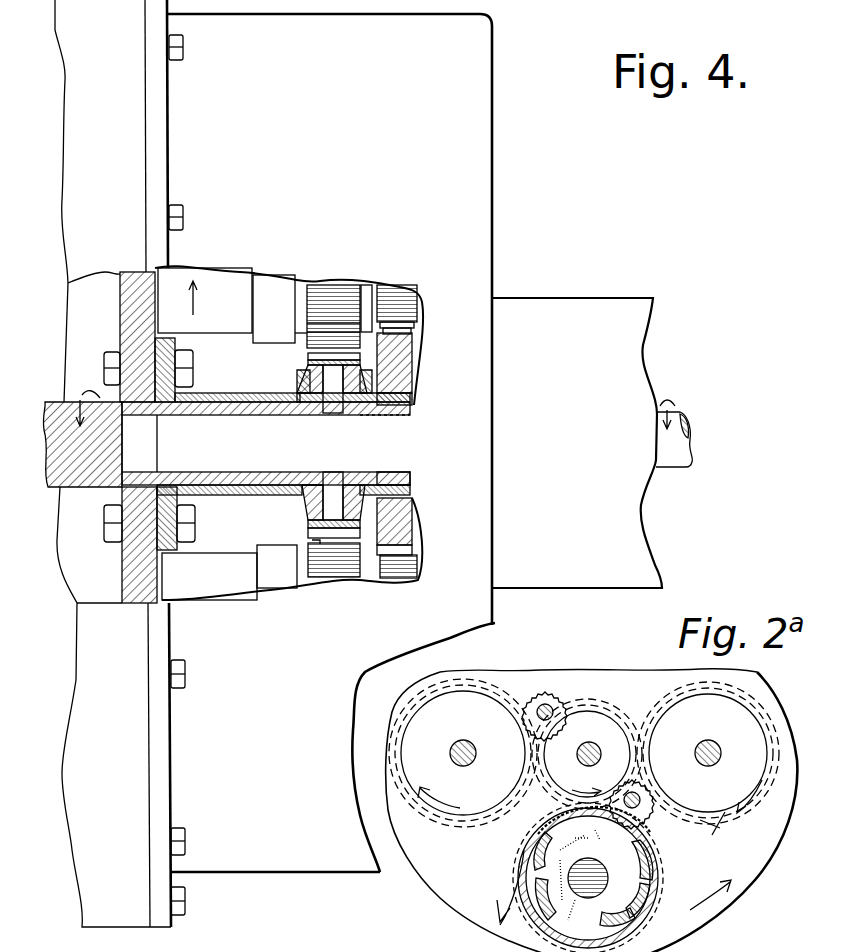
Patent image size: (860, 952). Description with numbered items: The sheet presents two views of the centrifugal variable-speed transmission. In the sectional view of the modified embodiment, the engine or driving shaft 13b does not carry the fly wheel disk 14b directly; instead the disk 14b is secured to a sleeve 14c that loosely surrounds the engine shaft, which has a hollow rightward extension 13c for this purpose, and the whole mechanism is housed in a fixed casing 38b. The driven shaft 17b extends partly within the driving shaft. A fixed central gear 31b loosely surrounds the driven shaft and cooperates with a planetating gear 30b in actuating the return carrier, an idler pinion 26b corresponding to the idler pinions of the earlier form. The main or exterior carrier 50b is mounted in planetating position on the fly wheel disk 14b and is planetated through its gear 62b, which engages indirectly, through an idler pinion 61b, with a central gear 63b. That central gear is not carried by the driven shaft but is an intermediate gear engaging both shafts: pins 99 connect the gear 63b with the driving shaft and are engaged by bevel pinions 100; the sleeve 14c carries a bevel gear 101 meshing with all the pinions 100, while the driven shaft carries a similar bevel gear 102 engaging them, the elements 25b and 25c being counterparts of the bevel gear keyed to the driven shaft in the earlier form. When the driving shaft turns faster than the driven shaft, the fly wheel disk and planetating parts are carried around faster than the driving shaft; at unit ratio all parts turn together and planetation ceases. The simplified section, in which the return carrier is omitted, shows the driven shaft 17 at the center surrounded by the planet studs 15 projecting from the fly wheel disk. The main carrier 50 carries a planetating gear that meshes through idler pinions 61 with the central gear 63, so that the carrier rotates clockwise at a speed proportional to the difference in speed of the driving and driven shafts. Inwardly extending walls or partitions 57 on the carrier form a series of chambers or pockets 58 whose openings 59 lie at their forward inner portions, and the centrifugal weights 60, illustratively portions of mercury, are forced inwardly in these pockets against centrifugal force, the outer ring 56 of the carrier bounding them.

In FIG. 4, the fixed casing 38b is at (358, 463).
In FIG. 4, the fly wheel disk 14b is at (130, 321).
In FIG. 4, the sleeve 14c is at (220, 393).
In FIG. 4, the engine shaft 13b is at (70, 425).
In FIG. 4, the driven shaft 17b is at (702, 439).
In FIG. 4, the hollow rightward extension 13c is at (242, 480).
In FIG. 4, the bevel gear 101 is at (300, 378).
In FIG. 4, the main or exterior carrier 50b is at (292, 292).
In FIG. 4, the gear 62b is at (333, 290).
In FIG. 4, the gear 30b is at (400, 290).
In FIG. 4, the collar 26b is at (400, 330).
In FIG. 4, the fixed central gear 31b is at (412, 365).
In FIG. 4, the central gear 63b is at (308, 356).
In FIG. 4, the pins 99 is at (332, 442).
In FIG. 4, the bevel pinions 100 is at (335, 405).
In FIG. 4, the bevel gear 102 is at (367, 395).
In FIG. 4, the spindle 25c is at (303, 480).
In FIG. 4, the spindle 25b is at (385, 475).
In FIG. 4, the pinion 61b is at (312, 538).
In FIG. 2A, the studs 15 is at (470, 747).
In FIG. 2A, the driven shaft 17 is at (578, 754).
In FIG. 2A, the idler pinions 61 is at (540, 700).
In FIG. 2A, the central gear 63 is at (566, 817).
In FIG. 2A, the drum 56 is at (652, 920).
In FIG. 2A, the main carrier 50 is at (645, 915).
In FIG. 2A, the chambers or pockets 58 is at (646, 872).
In FIG. 2A, the openings 59 is at (645, 898).
In FIG. 2A, the inwardly extending walls or partitions 57 is at (606, 928).
In FIG. 2A, the centrifugal weights 60 is at (570, 895).